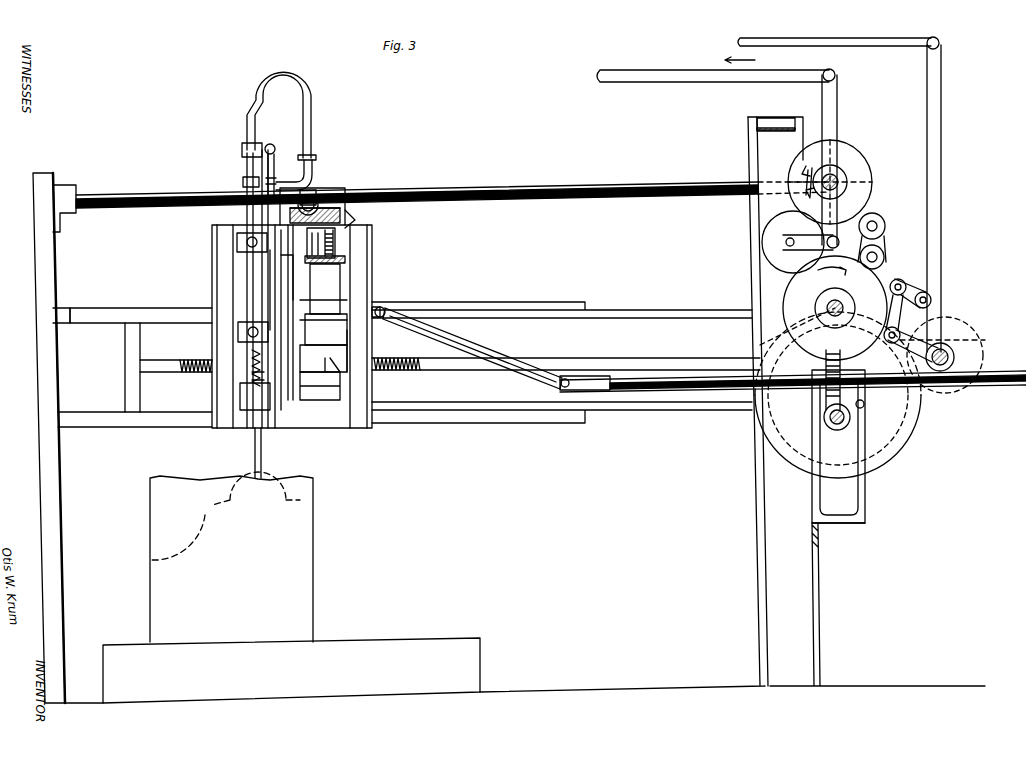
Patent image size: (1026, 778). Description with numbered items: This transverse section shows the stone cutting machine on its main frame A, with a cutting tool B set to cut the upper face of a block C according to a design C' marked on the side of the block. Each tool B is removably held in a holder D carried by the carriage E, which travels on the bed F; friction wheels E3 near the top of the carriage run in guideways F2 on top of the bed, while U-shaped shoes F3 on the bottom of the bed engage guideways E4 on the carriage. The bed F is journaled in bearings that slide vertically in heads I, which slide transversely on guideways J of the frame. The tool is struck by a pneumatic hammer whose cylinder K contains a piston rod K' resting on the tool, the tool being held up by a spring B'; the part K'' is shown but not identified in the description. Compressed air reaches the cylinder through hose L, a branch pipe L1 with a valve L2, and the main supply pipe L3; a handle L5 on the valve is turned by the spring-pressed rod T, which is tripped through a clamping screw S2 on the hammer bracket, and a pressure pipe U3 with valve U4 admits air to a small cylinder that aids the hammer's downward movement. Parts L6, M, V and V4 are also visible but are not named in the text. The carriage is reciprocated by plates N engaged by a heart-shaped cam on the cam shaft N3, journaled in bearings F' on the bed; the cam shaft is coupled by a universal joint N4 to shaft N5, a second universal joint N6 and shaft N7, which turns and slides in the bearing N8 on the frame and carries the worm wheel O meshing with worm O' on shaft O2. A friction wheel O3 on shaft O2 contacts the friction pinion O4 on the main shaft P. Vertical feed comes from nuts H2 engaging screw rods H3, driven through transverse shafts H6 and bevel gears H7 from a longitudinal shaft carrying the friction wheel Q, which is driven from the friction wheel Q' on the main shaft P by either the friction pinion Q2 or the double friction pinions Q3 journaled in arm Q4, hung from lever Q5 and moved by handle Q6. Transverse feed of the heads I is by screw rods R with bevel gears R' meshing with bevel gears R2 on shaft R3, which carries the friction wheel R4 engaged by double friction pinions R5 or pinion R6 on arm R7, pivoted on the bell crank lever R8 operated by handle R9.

The main frame A is at (42, 512).
The cutting tools B is at (250, 414).
The spring B' is at (243, 382).
The block C is at (291, 589).
The predetermined design C' is at (225, 516).
The holders D is at (240, 407).
The carriage E is at (300, 398).
The friction wheels E3 is at (368, 226).
The guideways E4 is at (326, 398).
The bed F is at (366, 362).
The bearings F' is at (347, 300).
The guideways F2 is at (345, 248).
The U-shaped shoes F3 is at (335, 374).
The nuts H2 is at (848, 190).
The screw rods H3 is at (848, 180).
The shafts H6 is at (586, 186).
The bevel gear wheels H7 is at (806, 170).
The heads I is at (217, 275).
The guideways J is at (140, 313).
The cylinders K is at (231, 245).
The piston rod K' is at (240, 290).
The bearing K'' is at (232, 332).
The hose L is at (312, 102).
The branch pipe L1 is at (322, 192).
The valve L2 is at (314, 168).
The main supply pipe L3 is at (320, 200).
The handle L5 is at (312, 150).
The bracket arm L6 is at (352, 215).
The block M is at (325, 289).
The plates N is at (326, 329).
The cam shaft N3 is at (323, 358).
The universal joint N4 is at (386, 309).
The shaft N5 is at (514, 372).
The universal joint N6 is at (592, 392).
The shaft N7 is at (714, 395).
The bearing N8 is at (820, 392).
The worm wheel O is at (870, 408).
The worm O' is at (837, 426).
The shaft O2 is at (845, 420).
The friction wheel O3 is at (890, 478).
The friction pinion O4 is at (800, 322).
The main shaft P is at (828, 306).
The friction wheel Q is at (812, 204).
The friction wheel Q' is at (751, 53).
The friction pinion Q2 is at (770, 243).
The double friction pinions Q3 is at (885, 230).
The arm Q4 is at (884, 259).
The lever Q5 is at (712, 82).
The handle Q6 is at (838, 120).
The screw rods R is at (450, 354).
The bevel gear wheels R' is at (912, 328).
The bevel gear wheels R2 is at (972, 336).
The shaft R3 is at (955, 356).
The friction wheel R4 is at (958, 322).
The double friction pinions R5 is at (930, 290).
The friction pinion R6 is at (841, 395).
The arm R7 is at (888, 328).
The bell crank lever R8 is at (942, 221).
The handle R9 is at (904, 36).
The clamping screw S2 is at (262, 268).
The rod T is at (287, 277).
The pressure supply pipe U3 is at (270, 144).
The valve U4 is at (278, 160).
The gear V is at (340, 240).
The plate V4 is at (347, 262).